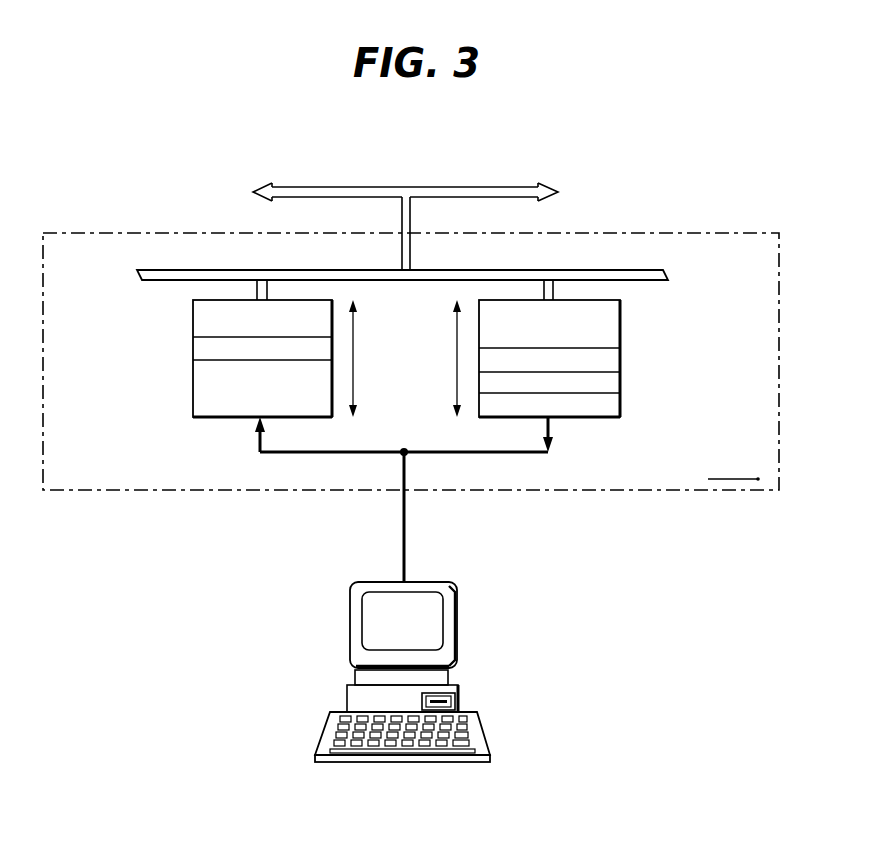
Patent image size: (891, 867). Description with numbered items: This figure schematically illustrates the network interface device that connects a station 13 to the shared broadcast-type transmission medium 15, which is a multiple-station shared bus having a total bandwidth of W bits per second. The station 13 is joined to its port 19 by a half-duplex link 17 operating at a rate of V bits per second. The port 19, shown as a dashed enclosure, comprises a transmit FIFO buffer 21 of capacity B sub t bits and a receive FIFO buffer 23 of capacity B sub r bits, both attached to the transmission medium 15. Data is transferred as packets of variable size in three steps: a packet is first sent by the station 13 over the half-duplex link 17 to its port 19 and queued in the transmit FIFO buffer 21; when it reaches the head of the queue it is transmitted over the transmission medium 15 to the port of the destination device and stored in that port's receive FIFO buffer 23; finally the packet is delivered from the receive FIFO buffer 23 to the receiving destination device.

The station 13 is at (458, 697).
The shared broadcast-type transmission medium 15 is at (500, 190).
The half-duplex link 17 is at (403, 527).
The port 19 is at (779, 240).
The transmit FIFO buffer 21 is at (193, 405).
The receive FIFO buffer 23 is at (620, 410).